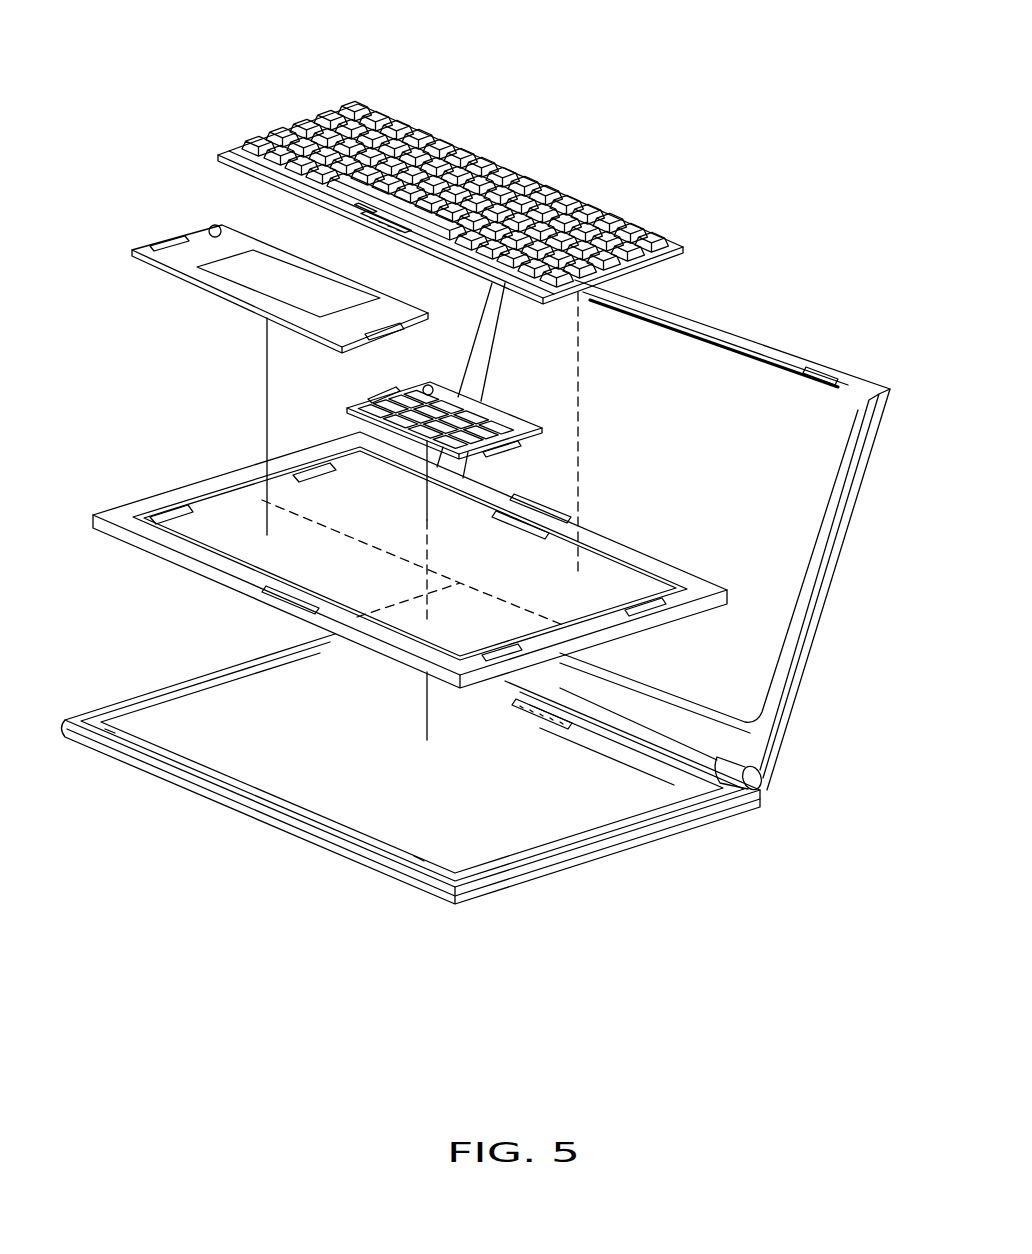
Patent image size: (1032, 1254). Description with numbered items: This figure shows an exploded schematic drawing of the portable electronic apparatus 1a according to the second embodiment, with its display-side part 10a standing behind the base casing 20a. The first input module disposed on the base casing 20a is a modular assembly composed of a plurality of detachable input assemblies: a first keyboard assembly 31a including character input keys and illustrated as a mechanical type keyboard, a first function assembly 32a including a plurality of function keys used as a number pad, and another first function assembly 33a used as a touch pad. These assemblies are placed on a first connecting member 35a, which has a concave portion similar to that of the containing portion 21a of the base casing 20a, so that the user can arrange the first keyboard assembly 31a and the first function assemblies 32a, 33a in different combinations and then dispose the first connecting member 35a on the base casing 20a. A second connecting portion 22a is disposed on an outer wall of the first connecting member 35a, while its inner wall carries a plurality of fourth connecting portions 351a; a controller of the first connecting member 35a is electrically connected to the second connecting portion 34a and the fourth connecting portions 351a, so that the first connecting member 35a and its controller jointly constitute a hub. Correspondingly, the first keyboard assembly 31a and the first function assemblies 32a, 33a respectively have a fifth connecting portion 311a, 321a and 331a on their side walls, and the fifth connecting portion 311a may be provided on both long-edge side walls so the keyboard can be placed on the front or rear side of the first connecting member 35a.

The portable electronic apparatus 1a is at (203, 62).
The display module 10a is at (755, 338).
The base casing 20a is at (411, 777).
The containing portion 21a is at (575, 828).
The second connecting portion 22a is at (557, 724).
The first keyboard assembly 31a is at (424, 202).
The fifth connecting portion 311a is at (380, 234).
The first function assembly 32a is at (502, 424).
The fifth connecting portion 321a is at (505, 455).
The first function assembly 33a is at (239, 272).
The fifth connecting portion 331a is at (119, 234).
The second connecting portion 34a is at (556, 512).
The first connecting member 35a is at (393, 516).
The fourth connecting portions 351a is at (297, 470).